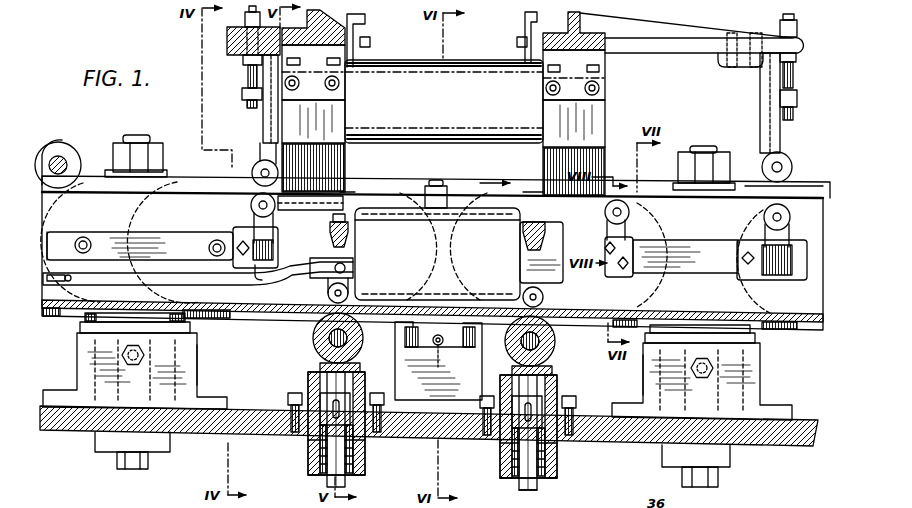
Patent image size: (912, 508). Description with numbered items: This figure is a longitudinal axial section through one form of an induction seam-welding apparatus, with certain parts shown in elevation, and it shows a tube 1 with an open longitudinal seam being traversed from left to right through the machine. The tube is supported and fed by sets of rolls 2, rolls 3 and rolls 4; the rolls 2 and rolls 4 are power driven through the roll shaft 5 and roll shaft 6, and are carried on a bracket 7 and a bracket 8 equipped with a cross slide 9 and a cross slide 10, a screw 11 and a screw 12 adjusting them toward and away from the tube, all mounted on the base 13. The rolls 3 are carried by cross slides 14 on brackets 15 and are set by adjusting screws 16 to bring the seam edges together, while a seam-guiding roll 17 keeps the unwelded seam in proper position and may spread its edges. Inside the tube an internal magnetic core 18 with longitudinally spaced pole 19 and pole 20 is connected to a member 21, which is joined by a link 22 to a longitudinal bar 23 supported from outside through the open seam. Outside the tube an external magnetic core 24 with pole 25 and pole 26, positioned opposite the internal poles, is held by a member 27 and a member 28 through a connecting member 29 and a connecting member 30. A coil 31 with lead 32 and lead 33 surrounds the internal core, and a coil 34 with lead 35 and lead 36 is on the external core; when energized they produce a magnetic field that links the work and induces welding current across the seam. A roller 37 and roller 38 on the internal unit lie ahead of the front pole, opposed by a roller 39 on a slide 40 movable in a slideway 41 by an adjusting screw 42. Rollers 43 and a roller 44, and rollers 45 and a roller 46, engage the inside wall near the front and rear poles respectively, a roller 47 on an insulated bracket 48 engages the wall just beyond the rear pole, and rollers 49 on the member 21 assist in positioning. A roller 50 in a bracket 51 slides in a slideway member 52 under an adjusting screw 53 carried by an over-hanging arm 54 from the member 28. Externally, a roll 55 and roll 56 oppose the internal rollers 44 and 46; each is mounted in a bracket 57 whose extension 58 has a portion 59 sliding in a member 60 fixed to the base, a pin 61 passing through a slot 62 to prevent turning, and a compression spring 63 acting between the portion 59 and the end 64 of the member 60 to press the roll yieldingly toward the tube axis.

The tube 1 is at (185, 190).
The rolls 2 is at (96, 174).
The rolls 3 is at (408, 205).
The rolls 4 is at (754, 190).
The roll shaft 5 is at (139, 140).
The roll shaft 6 is at (712, 146).
The bracket 7 is at (78, 365).
The bracket 8 is at (762, 381).
The cross slide 9 is at (198, 365).
The cross slide 10 is at (642, 381).
The screw 11 is at (133, 366).
The screw 12 is at (702, 379).
The base 13 is at (63, 432).
The cross slides 14 is at (405, 340).
The brackets 15 is at (482, 370).
The adjusting screws 16 is at (440, 348).
The seam-guiding roll 17 is at (60, 144).
The internal magnetic core 18 is at (495, 171).
The pole 19 is at (345, 192).
The pole 20 is at (543, 194).
The member 21 is at (221, 240).
The link 22 is at (143, 236).
The longitudinal bar 23 is at (63, 240).
The external magnetic core 24 is at (466, 85).
The pole 25 is at (345, 168).
The pole 26 is at (543, 168).
The member 27 is at (333, 32).
The member 28 is at (562, 34).
The connecting member 29 is at (345, 83).
The connecting member 30 is at (606, 86).
The coil 31 is at (463, 208).
The lead 32 is at (68, 282).
The lead 33 is at (311, 262).
The coil 34 is at (416, 62).
The lead 35 is at (366, 22).
The lead 36 is at (525, 21).
The roller 37 is at (251, 205).
The roller 38 is at (258, 268).
The roller 39 is at (254, 166).
The slide 40 is at (262, 125).
The slideway 41 is at (246, 73).
The adjusting screw 42 is at (242, 96).
The rollers 43 is at (330, 236).
The roller 44 is at (327, 294).
The rollers 45 is at (563, 238).
The roller 46 is at (544, 298).
The roller 47 is at (630, 216).
The bracket 48 is at (634, 245).
The rollers 49 is at (791, 218).
The roller 50 is at (792, 167).
The bracket 51 is at (780, 142).
The slideway member 52 is at (796, 73).
The adjusting screw 53 is at (797, 110).
The over-hanging arm 54 is at (682, 46).
The roll 55 is at (312, 338).
The roll 56 is at (557, 341).
The bracket 57 is at (320, 368).
The extension 58 is at (308, 390).
The portion 59 is at (309, 438).
The member 60 is at (318, 473).
The pin 61 is at (352, 405).
The slot 62 is at (364, 438).
The compression spring 63 is at (302, 455).
The end 64 is at (522, 484).